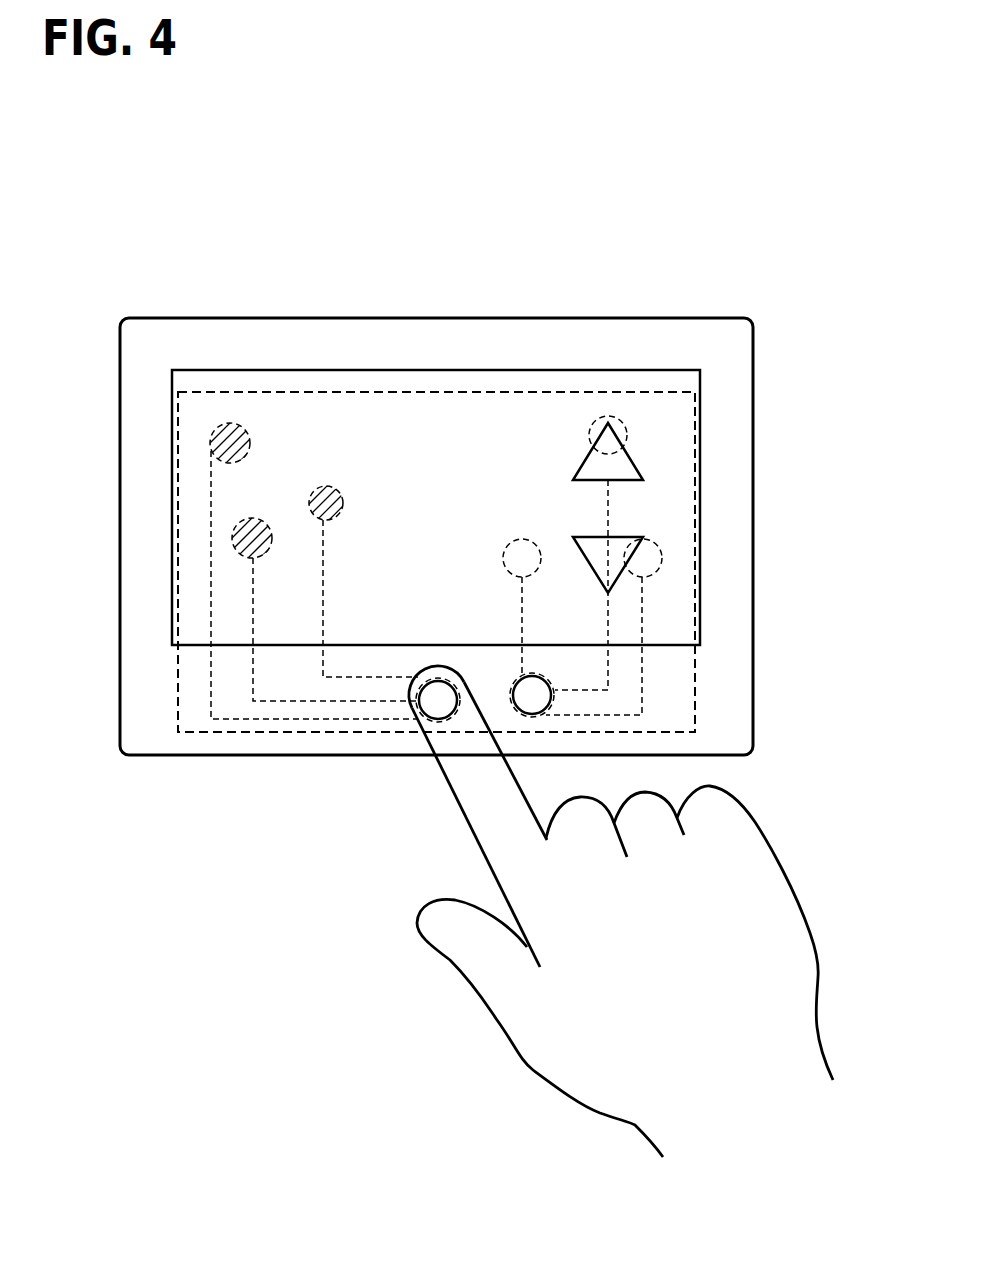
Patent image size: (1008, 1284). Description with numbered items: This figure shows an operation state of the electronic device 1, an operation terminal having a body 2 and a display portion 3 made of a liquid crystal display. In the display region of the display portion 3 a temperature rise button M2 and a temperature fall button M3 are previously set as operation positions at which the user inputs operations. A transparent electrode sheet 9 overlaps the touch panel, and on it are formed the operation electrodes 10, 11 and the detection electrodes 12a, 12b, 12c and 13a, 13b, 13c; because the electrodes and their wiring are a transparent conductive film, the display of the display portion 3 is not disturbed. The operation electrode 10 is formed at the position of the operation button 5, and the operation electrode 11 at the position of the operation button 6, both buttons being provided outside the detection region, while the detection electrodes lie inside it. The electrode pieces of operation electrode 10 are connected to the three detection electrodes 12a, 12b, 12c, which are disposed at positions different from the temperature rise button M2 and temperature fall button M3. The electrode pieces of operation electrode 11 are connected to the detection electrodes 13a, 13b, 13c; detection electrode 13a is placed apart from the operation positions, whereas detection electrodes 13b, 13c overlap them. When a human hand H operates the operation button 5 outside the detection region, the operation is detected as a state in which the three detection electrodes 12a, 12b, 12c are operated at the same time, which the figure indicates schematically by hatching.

The electronic device 1 is at (582, 287).
The body 2 is at (753, 372).
The display portion 3 is at (700, 445).
The transparent electrode sheet 9 is at (695, 688).
The detection electrode 12a is at (249, 441).
The detection electrode 12b is at (245, 518).
The detection electrode 12c is at (331, 487).
The detection electrode 13a is at (540, 551).
The detection electrode 13b is at (629, 435).
The detection electrode 13c is at (660, 548).
The temperature rise button M2 is at (585, 463).
The temperature fall button M3 is at (592, 566).
The operation button 5 is at (420, 709).
The operation button 6 is at (544, 708).
The operation electrode 10 is at (436, 712).
The operation electrode 11 is at (541, 718).
The human hand H is at (783, 873).